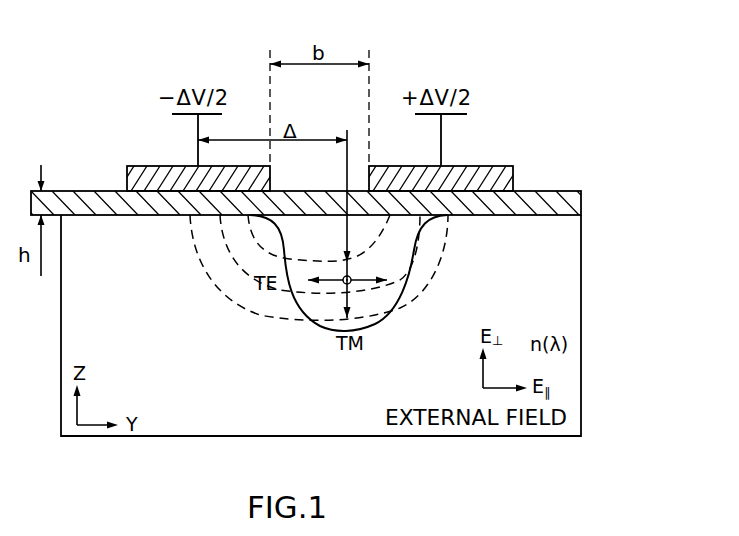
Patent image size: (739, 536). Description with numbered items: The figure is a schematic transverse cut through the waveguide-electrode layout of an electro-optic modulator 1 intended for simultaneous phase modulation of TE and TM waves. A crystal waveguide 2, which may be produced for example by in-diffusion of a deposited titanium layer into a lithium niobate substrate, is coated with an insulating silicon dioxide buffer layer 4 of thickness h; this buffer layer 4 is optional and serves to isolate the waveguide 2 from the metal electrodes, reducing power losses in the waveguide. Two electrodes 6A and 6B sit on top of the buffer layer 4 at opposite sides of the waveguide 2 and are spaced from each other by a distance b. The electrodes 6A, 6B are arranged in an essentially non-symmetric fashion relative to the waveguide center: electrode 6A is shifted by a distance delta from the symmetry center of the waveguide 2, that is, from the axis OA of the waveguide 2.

The electro-optic modulator 1 is at (613, 41).
The crystal waveguide 2 is at (373, 262).
The insulating SiO2 buffer layer 4 is at (560, 191).
The electrode 6A is at (147, 166).
The electrode 6B is at (498, 166).
The axis of the waveguide OA is at (355, 279).